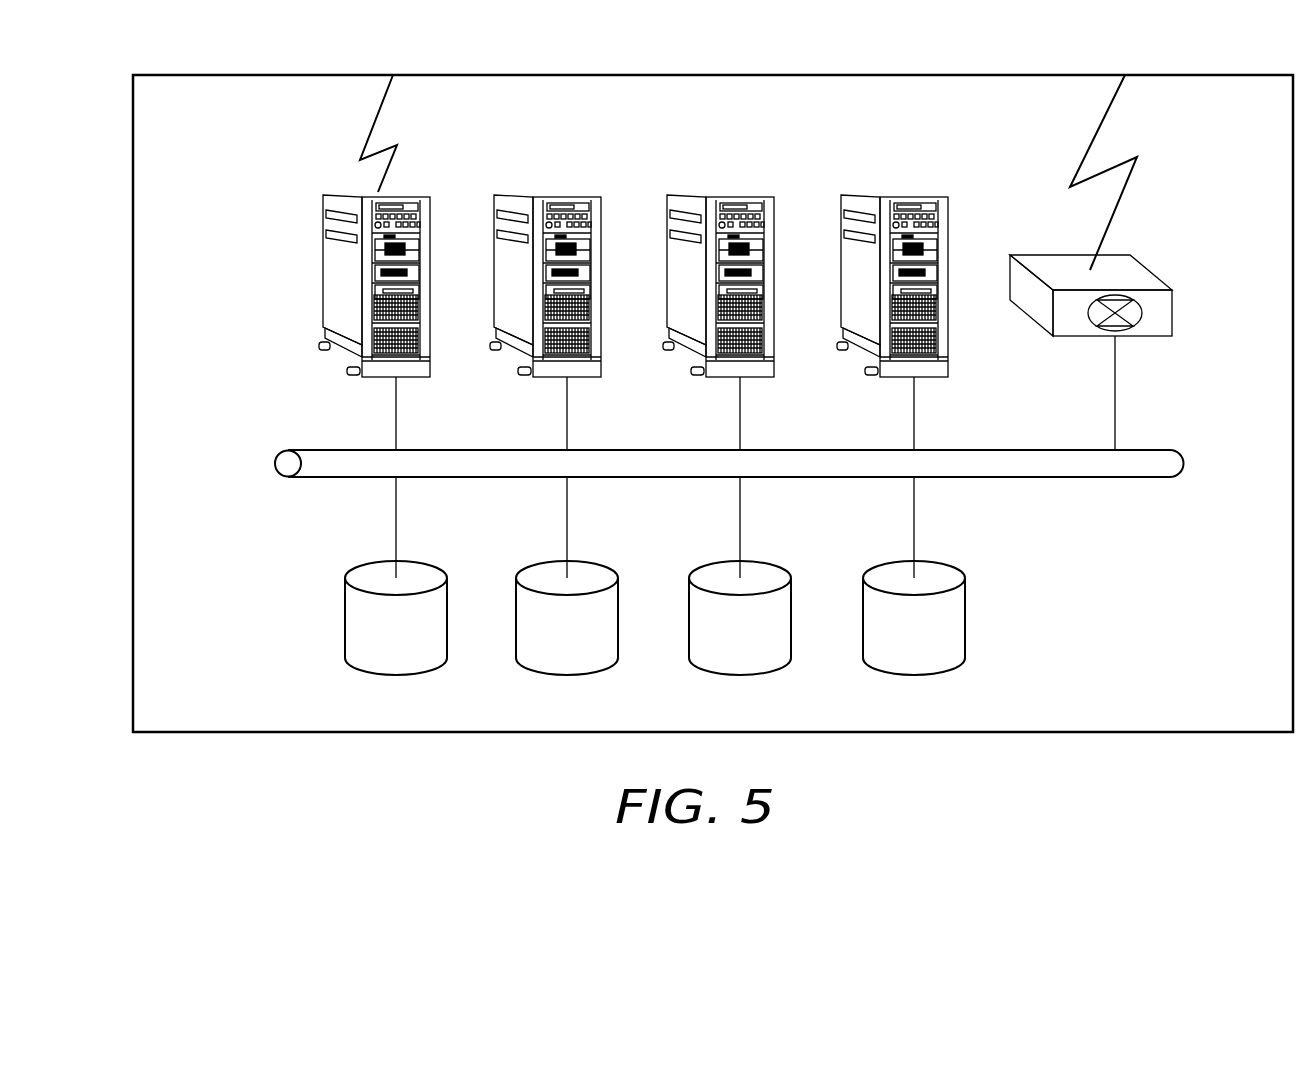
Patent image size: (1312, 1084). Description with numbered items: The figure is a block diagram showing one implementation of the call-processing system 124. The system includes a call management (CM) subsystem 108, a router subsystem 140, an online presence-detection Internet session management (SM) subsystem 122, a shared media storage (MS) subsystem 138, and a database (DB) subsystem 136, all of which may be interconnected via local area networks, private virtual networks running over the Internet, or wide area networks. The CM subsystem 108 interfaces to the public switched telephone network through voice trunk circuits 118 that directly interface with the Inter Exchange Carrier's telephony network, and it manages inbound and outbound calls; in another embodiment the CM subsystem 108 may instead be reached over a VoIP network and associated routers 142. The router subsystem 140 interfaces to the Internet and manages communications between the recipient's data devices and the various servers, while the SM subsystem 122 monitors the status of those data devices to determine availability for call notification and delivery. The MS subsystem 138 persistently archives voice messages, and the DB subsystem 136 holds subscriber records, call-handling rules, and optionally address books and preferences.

The call-processing system 124 is at (630, 75).
The voice trunk circuits 118 is at (377, 113).
The call management (CM) subsystem 108 is at (345, 270).
The online presence-detection Internet session management (SM) subsystem 122 is at (946, 325).
The routers 142 is at (1104, 121).
The router subsystem 140 is at (1175, 307).
The shared media storage (MS) subsystem 138 is at (358, 612).
The database (DB) subsystem 136 is at (948, 622).